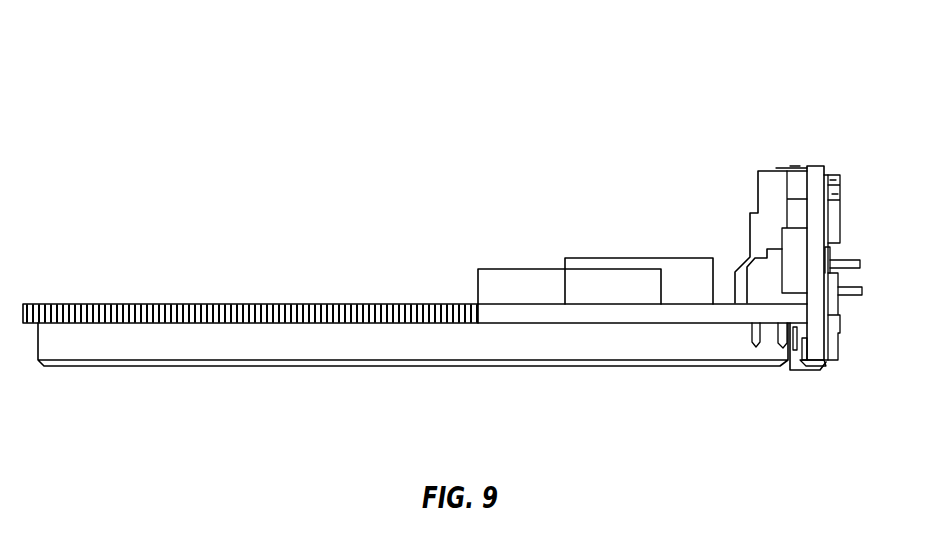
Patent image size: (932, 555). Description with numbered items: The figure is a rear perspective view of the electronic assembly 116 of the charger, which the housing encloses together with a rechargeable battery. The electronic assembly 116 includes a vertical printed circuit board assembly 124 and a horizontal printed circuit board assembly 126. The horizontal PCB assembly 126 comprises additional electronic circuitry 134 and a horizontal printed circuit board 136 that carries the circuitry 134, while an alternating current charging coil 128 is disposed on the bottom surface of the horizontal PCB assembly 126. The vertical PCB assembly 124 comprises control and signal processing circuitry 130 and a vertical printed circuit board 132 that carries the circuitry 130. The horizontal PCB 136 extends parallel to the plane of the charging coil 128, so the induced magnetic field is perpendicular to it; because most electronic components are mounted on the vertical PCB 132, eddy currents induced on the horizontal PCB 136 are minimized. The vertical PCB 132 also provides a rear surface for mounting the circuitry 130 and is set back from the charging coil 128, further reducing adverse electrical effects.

The electronic assembly 116 is at (192, 70).
The vertical printed circuit board assembly 124 is at (823, 155).
The horizontal printed circuit board assembly 126 is at (262, 295).
The alternating current charging coil 128 is at (208, 350).
The control and signal processing circuitry 130 is at (790, 170).
The printed circuit board 132 is at (812, 362).
The additional electronic circuitry 134 is at (590, 257).
The printed circuit board 136 is at (552, 317).